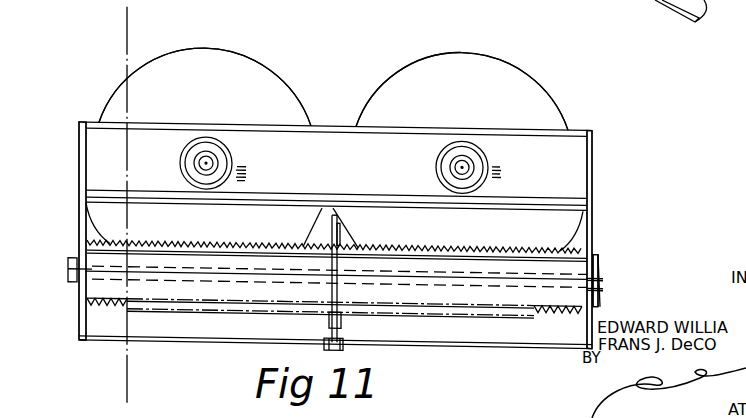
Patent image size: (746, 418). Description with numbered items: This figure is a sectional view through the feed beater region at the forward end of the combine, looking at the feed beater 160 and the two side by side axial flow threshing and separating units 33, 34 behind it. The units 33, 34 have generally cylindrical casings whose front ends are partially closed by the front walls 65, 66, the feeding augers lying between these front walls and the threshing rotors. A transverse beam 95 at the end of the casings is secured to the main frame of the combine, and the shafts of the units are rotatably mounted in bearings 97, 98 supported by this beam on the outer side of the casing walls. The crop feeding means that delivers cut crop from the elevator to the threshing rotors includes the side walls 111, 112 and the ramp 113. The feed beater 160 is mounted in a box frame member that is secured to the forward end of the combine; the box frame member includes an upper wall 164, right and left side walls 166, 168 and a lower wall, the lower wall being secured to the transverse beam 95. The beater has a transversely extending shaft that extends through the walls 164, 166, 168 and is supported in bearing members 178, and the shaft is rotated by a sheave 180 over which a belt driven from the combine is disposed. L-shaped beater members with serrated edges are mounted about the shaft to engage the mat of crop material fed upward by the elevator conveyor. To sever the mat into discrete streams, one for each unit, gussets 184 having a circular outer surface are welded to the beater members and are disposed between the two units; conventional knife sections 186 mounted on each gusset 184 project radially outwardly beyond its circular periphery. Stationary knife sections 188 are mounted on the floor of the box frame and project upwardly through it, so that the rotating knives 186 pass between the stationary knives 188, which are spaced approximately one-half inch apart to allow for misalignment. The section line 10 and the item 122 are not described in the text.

The section line 10- 10 is at (163, 22).
The threshing and separating unit 33 is at (226, 13).
The threshing and separating unit 34 is at (448, 40).
The front wall 65 is at (260, 77).
The front wall 66 is at (528, 82).
The transverse beam 95 is at (348, 172).
The bearing 97 is at (222, 158).
The bearing 98 is at (477, 153).
The side wall 111 is at (80, 163).
The side wall 112 is at (590, 147).
The ramp 113 is at (540, 337).
The adjacent figure element 122 is at (642, 11).
The feed beater 160 is at (95, 233).
The upper wall 164 is at (592, 199).
The right side wall 166 is at (84, 247).
The left side wall 168 is at (590, 227).
The bearing member 178 is at (70, 280).
The sheave 180 is at (600, 244).
The gusset 184 is at (350, 228).
The knife section 186 is at (322, 224).
The stationary knife section 188 is at (360, 322).